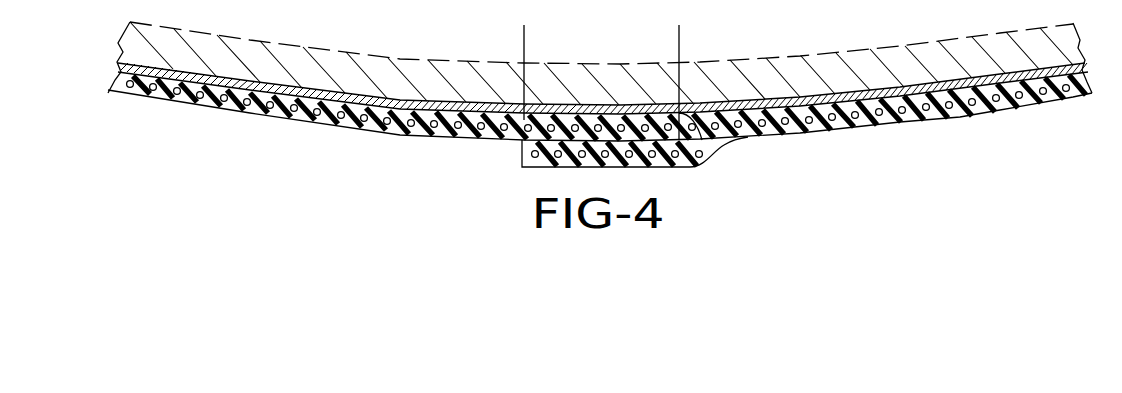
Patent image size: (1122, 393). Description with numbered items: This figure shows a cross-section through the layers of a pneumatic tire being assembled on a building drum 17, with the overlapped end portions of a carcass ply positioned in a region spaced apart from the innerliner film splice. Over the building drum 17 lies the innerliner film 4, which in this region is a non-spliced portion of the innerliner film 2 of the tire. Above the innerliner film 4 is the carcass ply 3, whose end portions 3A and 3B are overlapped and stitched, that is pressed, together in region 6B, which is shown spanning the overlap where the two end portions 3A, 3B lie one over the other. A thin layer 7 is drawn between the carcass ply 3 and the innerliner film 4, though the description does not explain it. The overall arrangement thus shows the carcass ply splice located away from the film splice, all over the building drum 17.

The innerliner film 2 is at (995, 176).
The carcass ply 3 is at (285, 117).
The end portion of carcass ply 3A is at (693, 117).
The end portion of carcass ply 3B is at (520, 153).
The innerliner film 4 is at (426, 99).
The region 6B is at (524, 37).
The adhesive layer 7 is at (488, 110).
The building drum 17 is at (815, 82).